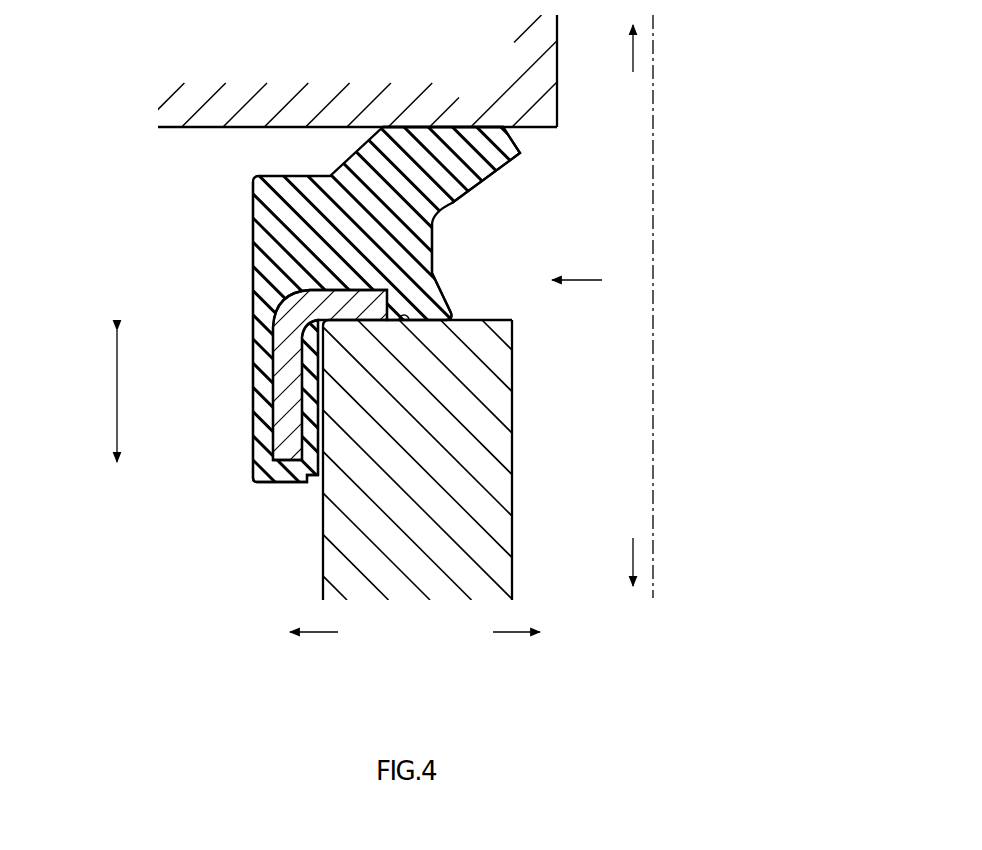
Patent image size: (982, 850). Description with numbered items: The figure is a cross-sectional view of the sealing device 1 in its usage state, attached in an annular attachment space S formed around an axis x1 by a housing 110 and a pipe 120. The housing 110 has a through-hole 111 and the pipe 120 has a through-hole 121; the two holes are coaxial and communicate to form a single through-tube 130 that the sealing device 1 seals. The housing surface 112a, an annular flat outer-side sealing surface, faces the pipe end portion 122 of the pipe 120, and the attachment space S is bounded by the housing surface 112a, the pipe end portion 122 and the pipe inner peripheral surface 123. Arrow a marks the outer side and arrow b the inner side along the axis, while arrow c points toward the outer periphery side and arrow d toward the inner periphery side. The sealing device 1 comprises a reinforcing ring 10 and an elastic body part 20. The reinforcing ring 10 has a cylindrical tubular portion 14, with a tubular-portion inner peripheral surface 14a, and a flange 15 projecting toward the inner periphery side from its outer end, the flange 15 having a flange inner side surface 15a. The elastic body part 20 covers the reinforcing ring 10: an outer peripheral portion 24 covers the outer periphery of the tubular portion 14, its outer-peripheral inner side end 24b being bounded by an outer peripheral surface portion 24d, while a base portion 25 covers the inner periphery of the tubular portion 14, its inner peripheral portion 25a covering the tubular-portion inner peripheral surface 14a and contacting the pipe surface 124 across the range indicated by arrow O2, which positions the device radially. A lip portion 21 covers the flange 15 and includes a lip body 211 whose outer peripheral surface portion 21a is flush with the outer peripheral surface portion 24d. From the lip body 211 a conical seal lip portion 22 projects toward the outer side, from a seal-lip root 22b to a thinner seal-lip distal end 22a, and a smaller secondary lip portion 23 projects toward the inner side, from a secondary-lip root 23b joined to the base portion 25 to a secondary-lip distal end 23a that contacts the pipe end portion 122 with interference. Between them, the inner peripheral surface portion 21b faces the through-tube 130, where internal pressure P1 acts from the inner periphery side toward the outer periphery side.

The sealing device 1 is at (137, 118).
The reinforcing ring 10 is at (166, 480).
The tubular portion 14 is at (262, 408).
The tubular-portion inner peripheral surface 14a is at (302, 377).
The flange 15 is at (345, 280).
The flange inner side surface 15a is at (355, 320).
The elastic body part 20 is at (136, 197).
The lip portion 21 is at (219, 207).
The outer peripheral surface portion 21a is at (252, 232).
The inner peripheral surface portion 21b is at (432, 226).
The lip body 211 is at (252, 200).
The seal lip portion 22 is at (357, 130).
The seal-lip distal end 22a is at (514, 152).
The seal-lip root 22b is at (358, 168).
The secondary lip portion 23 is at (535, 252).
The secondary-lip distal end 23a is at (447, 313).
The secondary-lip root 23b is at (434, 277).
The outer peripheral portion 24 is at (227, 372).
The outer-peripheral inner side end 24b is at (253, 483).
The outer peripheral surface portion 24d is at (252, 318).
The base portion 25 is at (326, 453).
The inner peripheral portion 25a is at (323, 416).
The housing 110 is at (573, 84).
The through-hole 111 is at (670, 125).
The housing surface 112a is at (530, 128).
The pipe 120 is at (546, 403).
The through-hole 121 is at (582, 518).
The pipe end portion 122 is at (500, 318).
The pipe inner peripheral surface 123 is at (512, 532).
The pipe surface 124 is at (325, 532).
The through-tube 130 is at (620, 218).
The attachment space S is at (203, 285).
The internal pressure P1 is at (602, 282).
The contact range O2 is at (117, 390).
The axis x1 is at (655, 38).
The outer side direction a is at (623, 48).
The inner side direction b is at (623, 562).
The outer periphery side direction c is at (314, 647).
The inner periphery side direction d is at (516, 646).